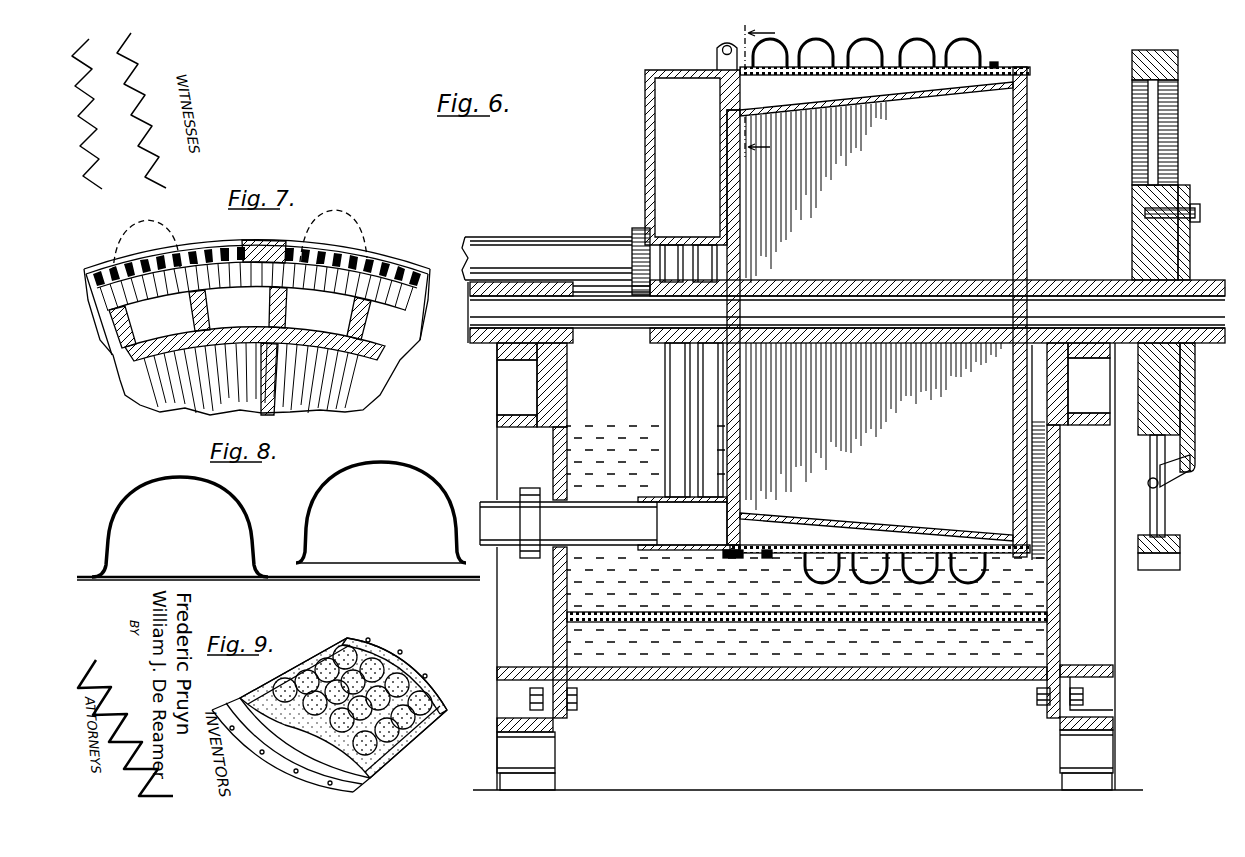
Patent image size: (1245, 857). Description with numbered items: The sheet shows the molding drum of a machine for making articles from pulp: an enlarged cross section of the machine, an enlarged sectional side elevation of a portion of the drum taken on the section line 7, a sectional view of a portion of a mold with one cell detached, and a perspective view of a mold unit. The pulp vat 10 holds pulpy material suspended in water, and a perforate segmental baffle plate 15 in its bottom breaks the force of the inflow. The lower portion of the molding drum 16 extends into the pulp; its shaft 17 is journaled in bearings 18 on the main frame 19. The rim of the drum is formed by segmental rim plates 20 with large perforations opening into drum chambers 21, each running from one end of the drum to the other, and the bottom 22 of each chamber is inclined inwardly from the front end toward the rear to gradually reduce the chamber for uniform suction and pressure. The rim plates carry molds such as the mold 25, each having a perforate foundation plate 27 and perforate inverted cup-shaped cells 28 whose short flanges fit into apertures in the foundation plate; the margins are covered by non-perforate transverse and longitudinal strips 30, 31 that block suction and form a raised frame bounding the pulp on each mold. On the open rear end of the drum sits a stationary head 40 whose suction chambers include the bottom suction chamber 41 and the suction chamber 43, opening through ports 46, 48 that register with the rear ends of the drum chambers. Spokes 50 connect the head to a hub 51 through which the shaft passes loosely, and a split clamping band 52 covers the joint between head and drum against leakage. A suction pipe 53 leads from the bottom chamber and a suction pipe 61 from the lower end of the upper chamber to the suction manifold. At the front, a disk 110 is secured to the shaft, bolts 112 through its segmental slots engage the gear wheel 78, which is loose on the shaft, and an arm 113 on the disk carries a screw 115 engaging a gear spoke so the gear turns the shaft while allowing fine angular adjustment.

In FIG. 6, the section line 7- 7 is at (769, 91).
In FIG. 6, the pulp vat 10 is at (700, 681).
In FIG. 6, the perforate segmental baffle plate 15 is at (875, 618).
In FIG. 6, the molding drum 16 is at (892, 313).
In FIG. 7, the molding drum 16 is at (254, 327).
In FIG. 6, the shaft 17 is at (908, 312).
In FIG. 6, the bearings 18 is at (545, 292).
In FIG. 6, the main frame 19 is at (505, 632).
In FIG. 6, the segmental rim plates 20 is at (845, 103).
In FIG. 7, the segmental rim plates 20 is at (175, 280).
In FIG. 9, the segmental rim plates 20 is at (262, 712).
In FIG. 6, the drum chambers 21 is at (898, 87).
In FIG. 7, the drum chambers 21 is at (362, 357).
In FIG. 6, the chamber bottom 22 is at (950, 92).
In FIG. 8, the perforate mold 25 is at (178, 527).
In FIG. 9, the perforate mold 25 is at (291, 745).
In FIG. 6, the perforate foundation plate 27 is at (807, 617).
In FIG. 7, the perforate foundation plate 27 is at (228, 246).
In FIG. 8, the perforate foundation plate 27 is at (280, 578).
In FIG. 9, the perforate foundation plate 27 is at (415, 748).
In FIG. 6, the perforate inverted cup-shaped cells 28 is at (878, 50).
In FIG. 7, the perforate inverted cup-shaped cells 28 is at (162, 222).
In FIG. 8, the perforate inverted cup-shaped cells 28 is at (225, 523).
In FIG. 9, the perforate inverted cup-shaped cells 28 is at (432, 697).
In FIG. 7, the transverse strips 30 is at (265, 242).
In FIG. 9, the transverse strips 30 is at (330, 660).
In FIG. 6, the longitudinal strips 31 is at (738, 46).
In FIG. 7, the longitudinal strips 31 is at (152, 262).
In FIG. 9, the longitudinal strips 31 is at (390, 647).
In FIG. 6, the stationary head 40 is at (623, 196).
In FIG. 6, the bottom suction chamber 41 is at (680, 542).
In FIG. 6, the suction chamber 43 is at (672, 63).
In FIG. 6, the port 46 is at (740, 533).
In FIG. 6, the port 48 is at (722, 100).
In FIG. 6, the spokes 50 is at (705, 245).
In FIG. 6, the hub 51 is at (646, 340).
In FIG. 6, the split clamping band 52 is at (720, 52).
In FIG. 6, the suction pipe 53 is at (510, 500).
In FIG. 6, the suction pipe 61 is at (583, 248).
In FIG. 6, the gear wheel 78 is at (1135, 120).
In FIG. 6, the disk 110 is at (1188, 248).
In FIG. 6, the bolts 112 is at (1197, 206).
In FIG. 6, the arm 113 is at (1180, 472).
In FIG. 6, the screw 115 is at (1168, 498).